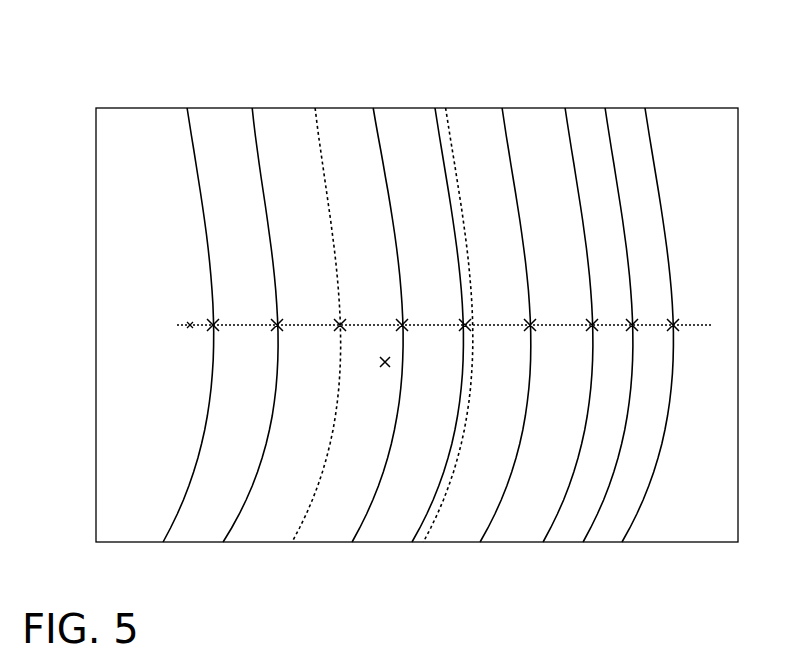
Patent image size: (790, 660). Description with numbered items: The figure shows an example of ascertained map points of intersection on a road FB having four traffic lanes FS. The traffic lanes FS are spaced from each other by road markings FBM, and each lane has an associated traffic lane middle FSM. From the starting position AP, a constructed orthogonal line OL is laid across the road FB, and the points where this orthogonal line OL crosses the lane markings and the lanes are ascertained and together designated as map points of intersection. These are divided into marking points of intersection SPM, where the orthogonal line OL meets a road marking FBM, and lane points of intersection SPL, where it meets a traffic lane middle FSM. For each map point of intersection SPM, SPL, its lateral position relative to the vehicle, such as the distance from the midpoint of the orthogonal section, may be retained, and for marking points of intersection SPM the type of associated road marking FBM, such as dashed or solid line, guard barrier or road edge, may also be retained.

The road FB is at (645, 58).
The traffic lane FS is at (647, 106).
The traffic lane middle FSM is at (226, 534).
The road marking FBM is at (296, 522).
The orthogonal line OL is at (189, 328).
The marking point of intersection SPM is at (210, 322).
The lane point of intersection SPL is at (280, 328).
The starting position AP is at (376, 379).